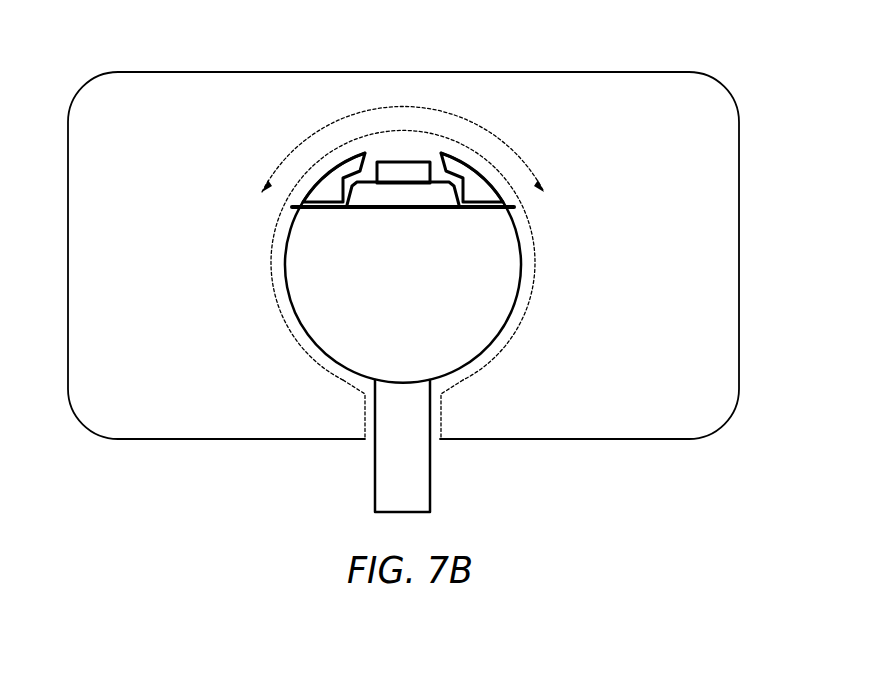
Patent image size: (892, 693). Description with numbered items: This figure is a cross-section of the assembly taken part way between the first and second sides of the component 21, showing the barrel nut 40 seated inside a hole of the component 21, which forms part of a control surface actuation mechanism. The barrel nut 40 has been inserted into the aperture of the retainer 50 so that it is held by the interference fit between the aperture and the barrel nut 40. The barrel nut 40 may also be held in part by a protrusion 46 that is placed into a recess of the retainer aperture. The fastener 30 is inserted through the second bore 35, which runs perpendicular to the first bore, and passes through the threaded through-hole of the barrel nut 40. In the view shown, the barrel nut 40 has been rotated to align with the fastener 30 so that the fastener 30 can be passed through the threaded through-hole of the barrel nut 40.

The component 21 is at (658, 90).
The fastener 30 is at (408, 173).
The second bore 35 is at (440, 423).
The barrel nut 40 is at (357, 318).
The protrusion 46 is at (432, 197).
The retainer 50 is at (480, 185).